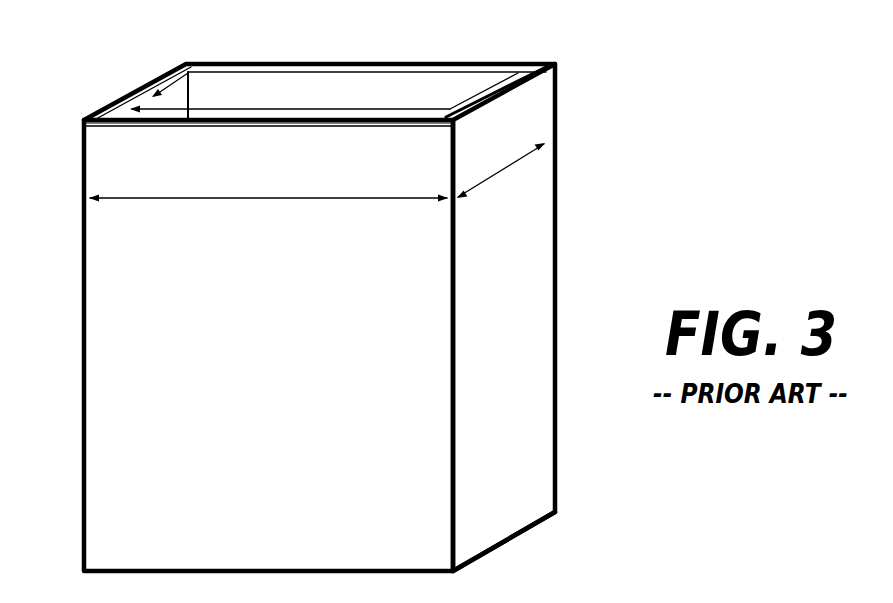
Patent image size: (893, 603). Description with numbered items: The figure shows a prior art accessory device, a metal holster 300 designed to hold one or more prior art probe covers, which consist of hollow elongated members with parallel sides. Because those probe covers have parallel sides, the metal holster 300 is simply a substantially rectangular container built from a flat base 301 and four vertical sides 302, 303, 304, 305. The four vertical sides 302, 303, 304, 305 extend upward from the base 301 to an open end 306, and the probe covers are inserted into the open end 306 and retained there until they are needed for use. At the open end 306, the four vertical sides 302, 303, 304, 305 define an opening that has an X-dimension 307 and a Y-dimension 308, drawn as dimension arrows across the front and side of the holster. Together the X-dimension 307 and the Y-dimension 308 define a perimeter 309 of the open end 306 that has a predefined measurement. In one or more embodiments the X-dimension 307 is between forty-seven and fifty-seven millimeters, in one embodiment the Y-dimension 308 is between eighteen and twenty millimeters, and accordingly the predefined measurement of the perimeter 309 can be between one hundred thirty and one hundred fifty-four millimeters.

The metal holster 300 is at (350, 297).
The flat base 301 is at (506, 542).
The vertical side 302 is at (193, 366).
The vertical side 303 is at (500, 342).
The vertical side 304 is at (452, 62).
The vertical side 305 is at (124, 92).
The open end 306 is at (260, 84).
The X-dimension 307 is at (262, 200).
The Y-dimension 308 is at (525, 158).
The perimeter 309 is at (142, 127).